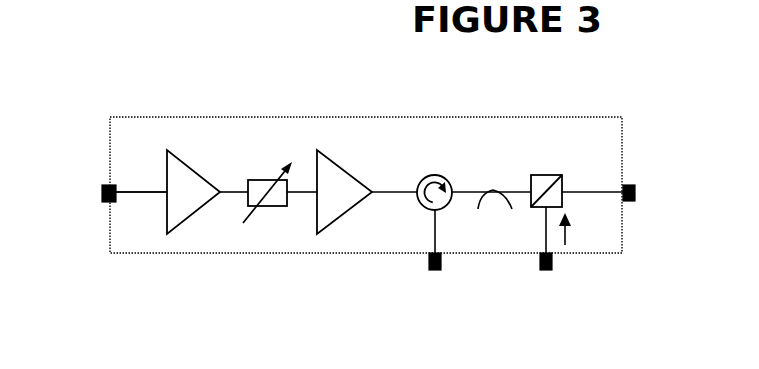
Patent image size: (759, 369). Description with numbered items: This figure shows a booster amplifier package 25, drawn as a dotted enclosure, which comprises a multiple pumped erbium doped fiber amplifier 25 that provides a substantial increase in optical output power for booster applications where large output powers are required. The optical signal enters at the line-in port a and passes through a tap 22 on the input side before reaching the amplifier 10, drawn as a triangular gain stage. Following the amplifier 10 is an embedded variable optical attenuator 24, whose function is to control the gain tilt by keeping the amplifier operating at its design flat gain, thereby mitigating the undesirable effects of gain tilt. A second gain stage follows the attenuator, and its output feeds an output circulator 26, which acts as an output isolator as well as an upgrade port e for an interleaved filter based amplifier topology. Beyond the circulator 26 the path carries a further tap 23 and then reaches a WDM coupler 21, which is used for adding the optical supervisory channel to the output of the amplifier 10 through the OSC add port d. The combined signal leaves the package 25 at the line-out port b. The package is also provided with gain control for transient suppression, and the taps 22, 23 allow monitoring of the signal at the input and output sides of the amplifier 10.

The amplifier 10 is at (182, 162).
The WDM coupler 21 is at (562, 177).
The tap 22 is at (152, 208).
The tap 23 is at (487, 192).
The variable optical attenuator 24 is at (281, 205).
The booster amplifier package 25 is at (298, 97).
The output circulator 26 is at (429, 175).
The line in port a is at (100, 193).
The line out port b is at (636, 192).
The OSC add port d is at (554, 260).
The upgrade port e is at (442, 262).